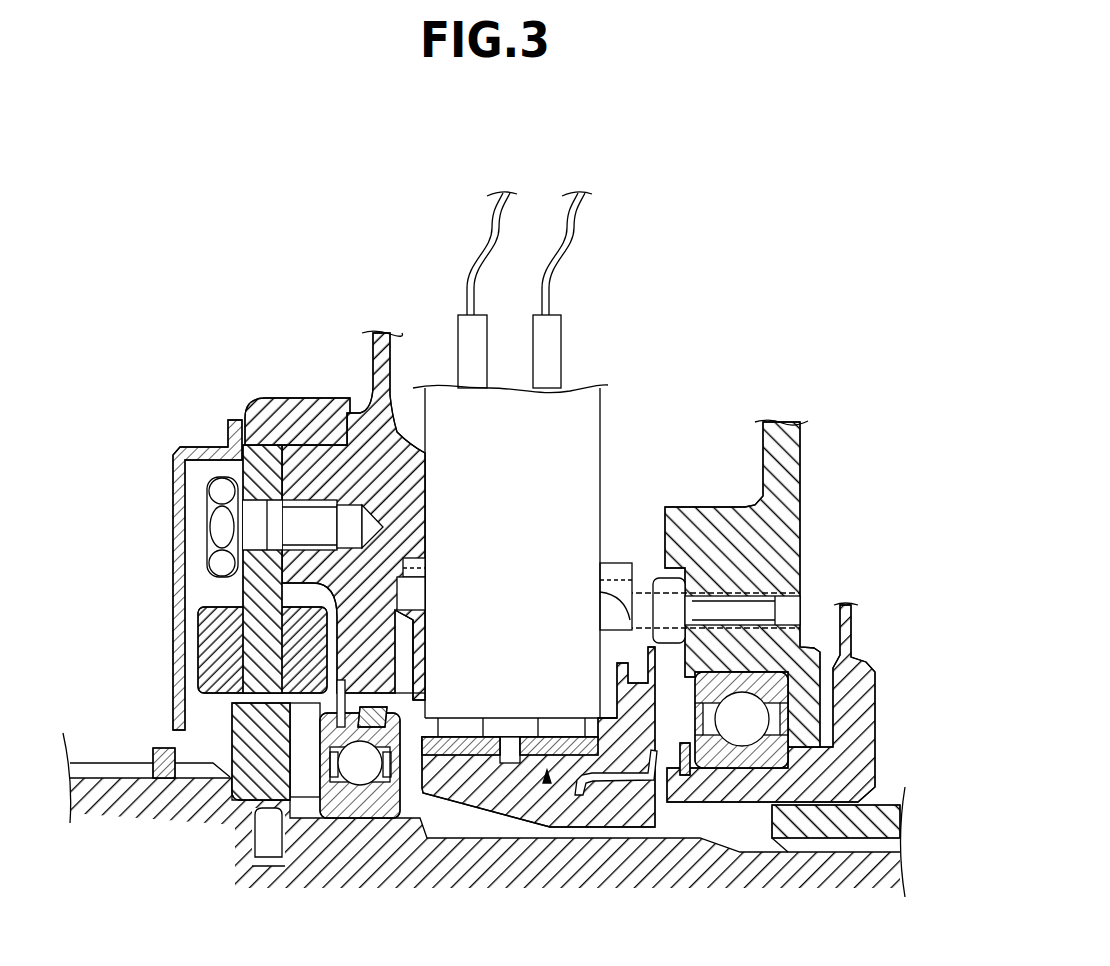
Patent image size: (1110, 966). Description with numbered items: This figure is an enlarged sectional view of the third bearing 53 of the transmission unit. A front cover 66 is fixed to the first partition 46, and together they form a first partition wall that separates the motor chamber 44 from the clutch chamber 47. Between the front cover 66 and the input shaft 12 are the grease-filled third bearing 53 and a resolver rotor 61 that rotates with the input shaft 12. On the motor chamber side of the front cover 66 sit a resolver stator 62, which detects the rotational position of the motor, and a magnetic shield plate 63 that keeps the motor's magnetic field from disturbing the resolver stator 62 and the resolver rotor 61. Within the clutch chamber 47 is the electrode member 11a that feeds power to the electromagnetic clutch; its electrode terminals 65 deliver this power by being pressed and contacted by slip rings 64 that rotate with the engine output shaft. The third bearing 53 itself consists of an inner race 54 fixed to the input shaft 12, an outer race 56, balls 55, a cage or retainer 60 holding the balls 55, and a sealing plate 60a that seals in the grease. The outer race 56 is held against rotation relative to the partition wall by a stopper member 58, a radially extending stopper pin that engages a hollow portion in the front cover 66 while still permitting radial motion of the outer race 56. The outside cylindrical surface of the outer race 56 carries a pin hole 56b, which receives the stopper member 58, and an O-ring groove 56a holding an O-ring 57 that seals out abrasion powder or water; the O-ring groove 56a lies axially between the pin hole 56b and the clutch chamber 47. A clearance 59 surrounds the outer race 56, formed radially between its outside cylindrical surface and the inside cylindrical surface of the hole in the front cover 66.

The electrode member 11a is at (547, 782).
The input shaft 12 is at (625, 865).
The motor chamber 44 is at (288, 320).
The first partition 46 is at (280, 410).
The clutch chamber 47 is at (703, 397).
The third bearing 53 is at (308, 755).
The inner race 54 is at (350, 772).
The balls 55 is at (318, 772).
The outer race 56 is at (374, 748).
The O-ring groove 56a is at (400, 730).
The pin hole 56b is at (322, 732).
The O-ring 57 is at (382, 700).
The stopper member 58 is at (410, 648).
The clearance 59 is at (392, 710).
The cage or retainer 60 is at (410, 790).
The sealing plate 60a is at (262, 866).
The resolver rotor 61 is at (248, 787).
The resolver stator 62 is at (210, 633).
The magnetic shield plate 63 is at (176, 492).
The slip rings 64 is at (535, 750).
The electrode terminals 65 is at (560, 727).
The front cover 66 is at (297, 472).